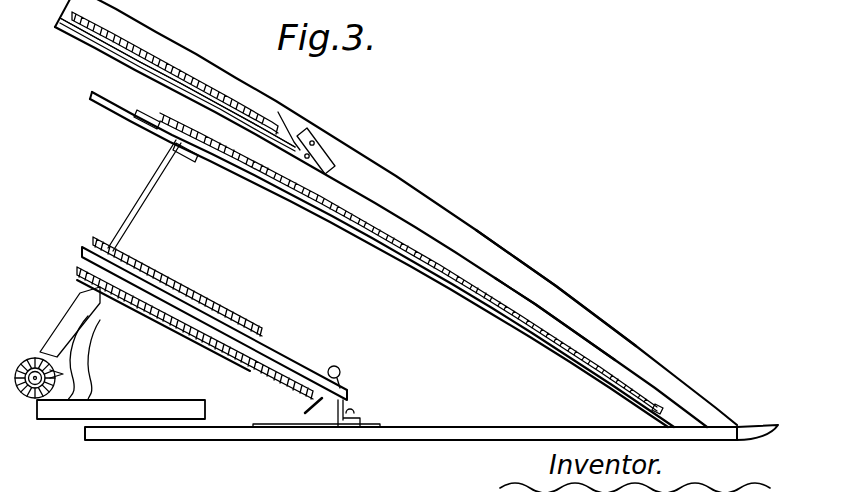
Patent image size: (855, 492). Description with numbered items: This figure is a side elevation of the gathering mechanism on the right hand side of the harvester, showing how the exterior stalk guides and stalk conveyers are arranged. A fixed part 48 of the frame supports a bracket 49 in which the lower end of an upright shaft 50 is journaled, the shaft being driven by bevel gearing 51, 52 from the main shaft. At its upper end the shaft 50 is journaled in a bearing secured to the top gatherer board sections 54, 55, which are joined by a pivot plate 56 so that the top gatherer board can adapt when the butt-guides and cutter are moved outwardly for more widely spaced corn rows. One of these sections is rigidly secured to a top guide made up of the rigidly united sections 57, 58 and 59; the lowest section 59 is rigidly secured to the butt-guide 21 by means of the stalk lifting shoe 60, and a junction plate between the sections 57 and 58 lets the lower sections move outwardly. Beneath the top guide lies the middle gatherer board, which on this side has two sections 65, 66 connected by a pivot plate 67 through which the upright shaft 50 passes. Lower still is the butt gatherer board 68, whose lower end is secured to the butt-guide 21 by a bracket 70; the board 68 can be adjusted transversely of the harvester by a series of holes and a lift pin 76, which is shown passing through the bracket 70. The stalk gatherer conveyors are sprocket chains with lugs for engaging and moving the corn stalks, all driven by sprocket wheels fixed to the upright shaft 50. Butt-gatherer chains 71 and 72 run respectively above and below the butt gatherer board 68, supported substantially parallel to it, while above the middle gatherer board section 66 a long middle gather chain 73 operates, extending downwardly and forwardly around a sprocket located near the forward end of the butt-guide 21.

The butt-guide 21 is at (350, 430).
The fixed part of the frame 48 is at (146, 401).
The bracket 49 is at (93, 377).
The upright shaft 50 is at (140, 196).
The bevel gear 51 is at (27, 403).
The bevel gear 52 is at (27, 367).
The top gatherer board section 54 is at (108, 53).
The top gatherer board section 55 is at (138, 114).
The pivot plate 56 is at (313, 122).
The top guide section 57 is at (157, 40).
The top guide section 58 is at (263, 98).
The top guide section 59 is at (482, 243).
The stalk lifting shoe 60 is at (776, 392).
The middle gatherer board section 65 is at (107, 103).
The middle gatherer board section 66 is at (310, 216).
The pivot plate 67 is at (197, 160).
The butt gatherer board 68 is at (284, 350).
The bracket 70 is at (348, 412).
The butt-gatherer chain 71 is at (197, 290).
The butt-gatherer chain 72 is at (230, 354).
The middle gather chain 73 is at (522, 300).
The lift pin 76 is at (340, 370).